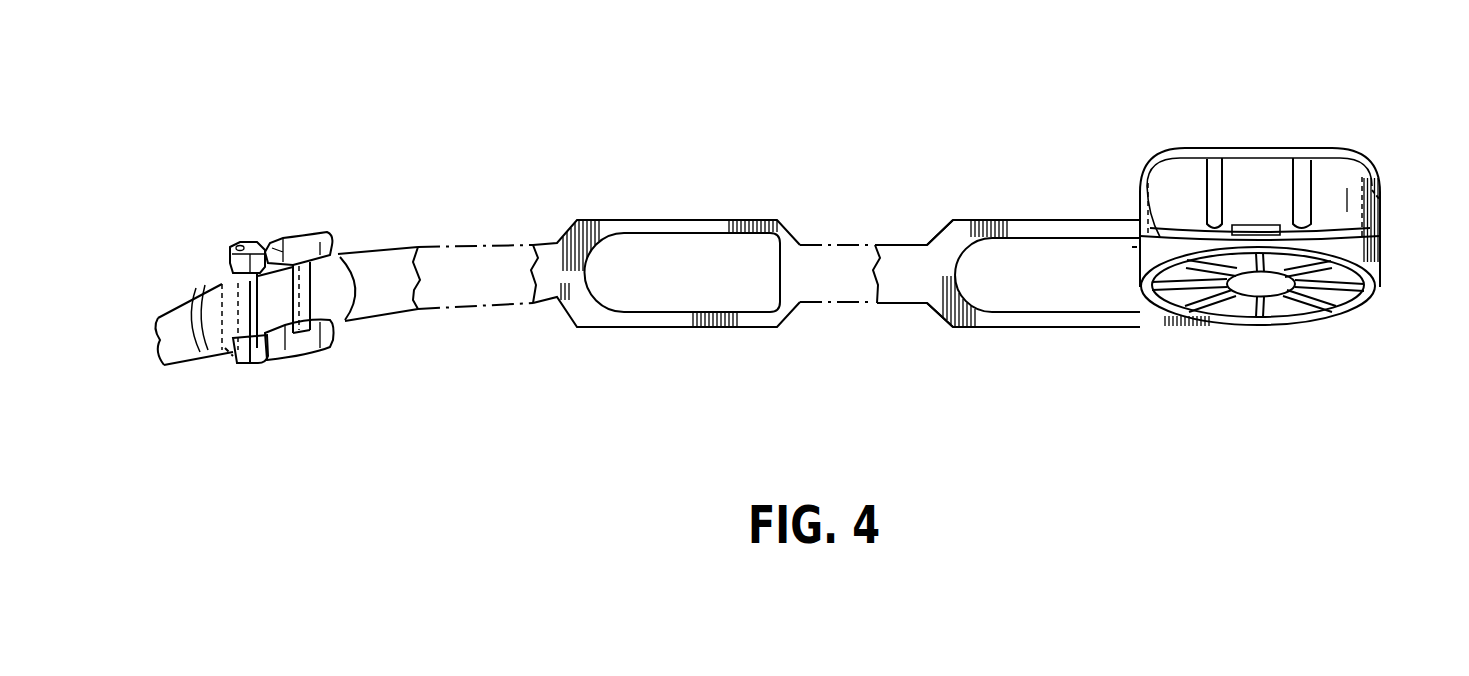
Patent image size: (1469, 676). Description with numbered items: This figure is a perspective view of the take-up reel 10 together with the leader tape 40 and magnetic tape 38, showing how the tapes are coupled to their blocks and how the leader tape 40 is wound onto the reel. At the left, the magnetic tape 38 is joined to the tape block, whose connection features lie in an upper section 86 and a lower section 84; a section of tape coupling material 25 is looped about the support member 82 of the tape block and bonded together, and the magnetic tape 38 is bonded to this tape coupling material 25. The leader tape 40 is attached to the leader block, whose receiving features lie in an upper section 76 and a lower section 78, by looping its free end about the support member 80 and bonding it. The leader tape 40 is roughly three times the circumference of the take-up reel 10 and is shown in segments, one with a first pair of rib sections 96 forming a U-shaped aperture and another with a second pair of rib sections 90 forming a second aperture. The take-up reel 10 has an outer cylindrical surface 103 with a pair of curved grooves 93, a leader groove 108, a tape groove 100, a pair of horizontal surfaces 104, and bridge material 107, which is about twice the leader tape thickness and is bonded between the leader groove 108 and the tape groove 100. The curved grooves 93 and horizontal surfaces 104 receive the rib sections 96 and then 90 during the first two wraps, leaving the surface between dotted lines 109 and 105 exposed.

The take-up reel 10 is at (1265, 224).
The tape coupling material 25 is at (225, 348).
The magnetic tape 38 is at (172, 303).
The leader tape 40 is at (936, 320).
The upper section 76 is at (313, 230).
The lower section 78 is at (313, 345).
The support member 80 is at (312, 303).
The support member 82 is at (225, 350).
The lower section 84 is at (258, 365).
The upper section 86 is at (247, 236).
The second pair of rib sections 90 is at (683, 220).
The curved grooves 93 is at (1157, 167).
The first pair of rib sections 96 is at (1027, 220).
The tape block support member receiving groove 100 is at (1333, 160).
The outer cylindrical surface 103 is at (1380, 230).
The horizontal surfaces 104 is at (1307, 183).
The dotted line 105 is at (1377, 193).
The bridge material 107 is at (1257, 170).
The leader block support member receiving groove 108 is at (1213, 168).
The dotted line 109 is at (1137, 245).